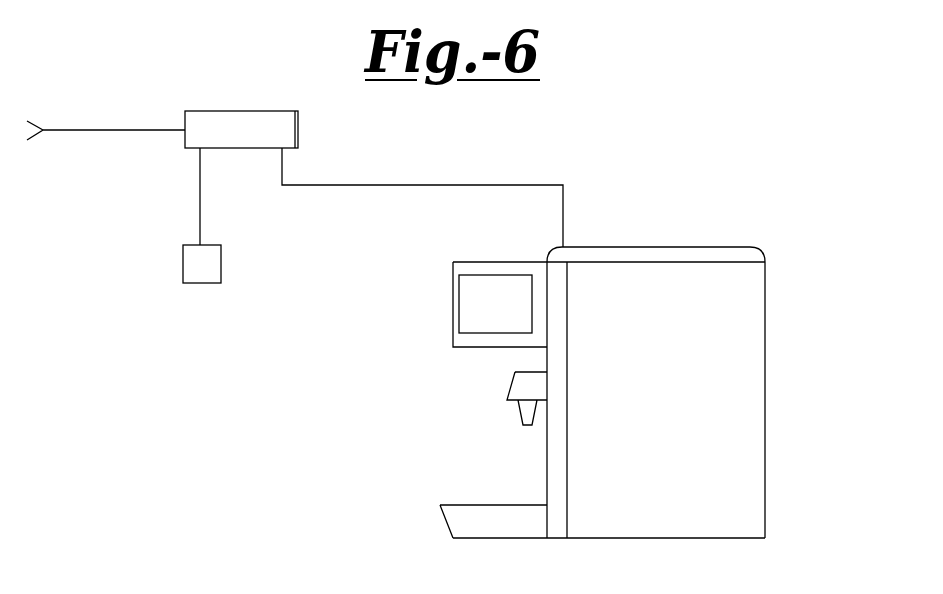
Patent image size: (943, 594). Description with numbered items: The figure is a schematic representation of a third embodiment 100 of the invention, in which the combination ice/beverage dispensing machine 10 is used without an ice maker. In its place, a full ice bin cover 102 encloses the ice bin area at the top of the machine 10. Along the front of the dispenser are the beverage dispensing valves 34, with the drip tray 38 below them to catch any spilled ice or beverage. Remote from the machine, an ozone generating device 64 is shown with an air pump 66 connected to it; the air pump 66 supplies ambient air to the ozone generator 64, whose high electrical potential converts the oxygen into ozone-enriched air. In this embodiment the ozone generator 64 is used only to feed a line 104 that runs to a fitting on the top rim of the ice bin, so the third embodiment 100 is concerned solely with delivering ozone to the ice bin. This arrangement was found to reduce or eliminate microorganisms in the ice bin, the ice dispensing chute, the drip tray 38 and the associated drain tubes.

The combination ice/beverage dispensing machine 10 is at (779, 372).
The beverage dispensing valve 34 is at (513, 377).
The drip tray 38 is at (442, 515).
The ozone generating device 64 is at (237, 110).
The air pump 66 is at (183, 267).
The third embodiment 100 is at (697, 162).
The ice bin cover 102 is at (715, 247).
The line 104 is at (360, 185).